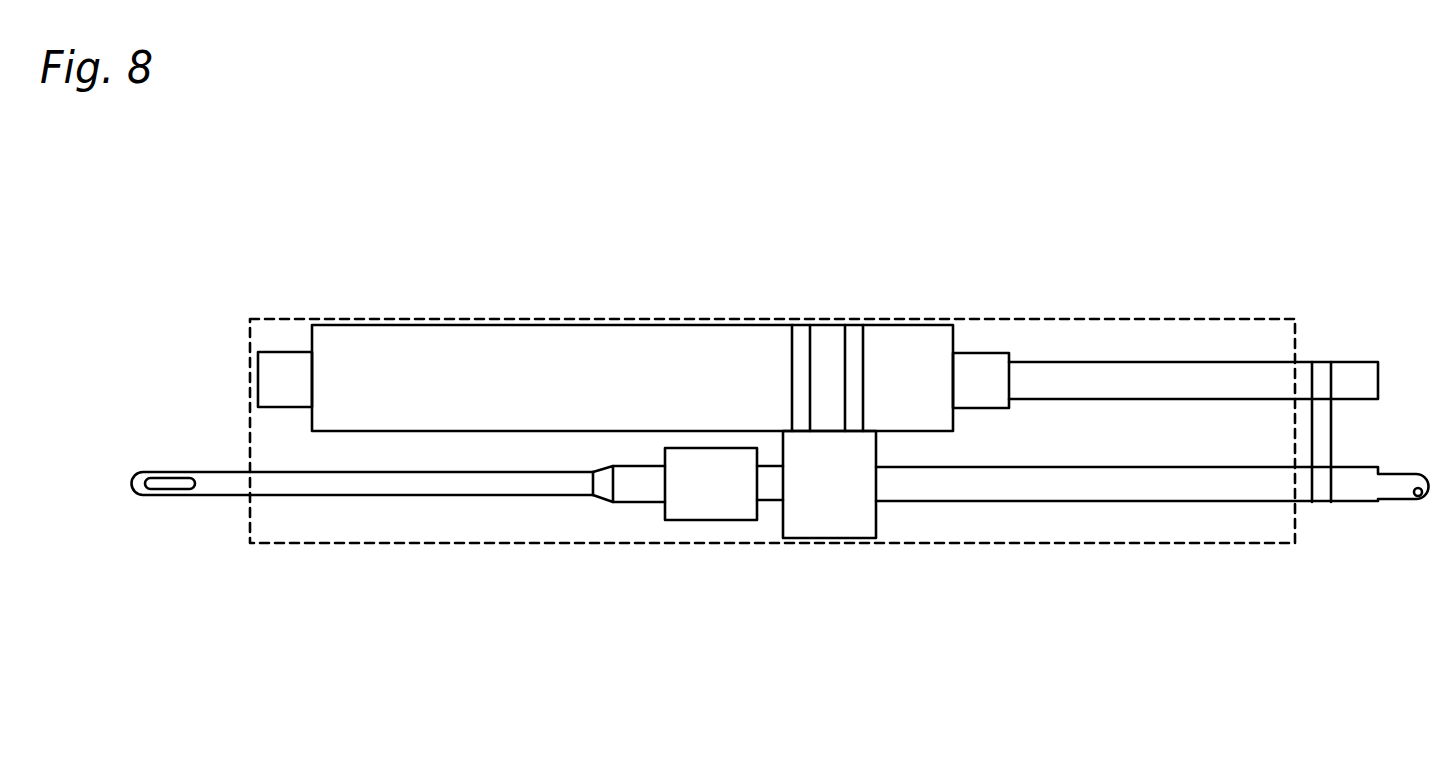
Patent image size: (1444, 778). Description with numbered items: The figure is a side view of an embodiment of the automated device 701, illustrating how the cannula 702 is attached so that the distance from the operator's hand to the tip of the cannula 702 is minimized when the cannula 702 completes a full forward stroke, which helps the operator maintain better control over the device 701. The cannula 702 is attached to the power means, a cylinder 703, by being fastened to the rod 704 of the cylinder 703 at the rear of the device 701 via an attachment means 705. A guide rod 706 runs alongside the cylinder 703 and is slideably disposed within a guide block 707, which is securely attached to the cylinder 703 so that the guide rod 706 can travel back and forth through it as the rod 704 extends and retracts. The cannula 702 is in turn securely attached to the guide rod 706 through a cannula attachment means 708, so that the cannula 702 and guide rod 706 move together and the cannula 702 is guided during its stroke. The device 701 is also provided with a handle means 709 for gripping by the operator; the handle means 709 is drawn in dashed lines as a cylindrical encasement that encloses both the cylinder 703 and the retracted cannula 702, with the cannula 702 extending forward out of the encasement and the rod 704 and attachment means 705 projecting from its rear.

The automated device 701 is at (437, 300).
The cannula 702 is at (230, 497).
The cylinder 703 is at (520, 431).
The rod 704 is at (1058, 362).
The attachment means 705 is at (1331, 428).
The guide rod 706 is at (1090, 501).
The guide block 707 is at (876, 519).
The cannula attachment means 708 is at (710, 520).
The handle means 709 is at (357, 543).